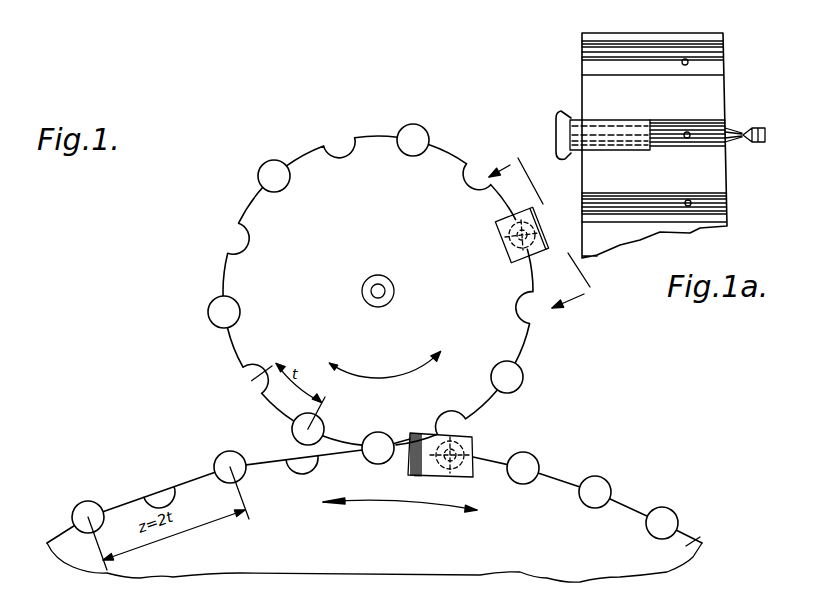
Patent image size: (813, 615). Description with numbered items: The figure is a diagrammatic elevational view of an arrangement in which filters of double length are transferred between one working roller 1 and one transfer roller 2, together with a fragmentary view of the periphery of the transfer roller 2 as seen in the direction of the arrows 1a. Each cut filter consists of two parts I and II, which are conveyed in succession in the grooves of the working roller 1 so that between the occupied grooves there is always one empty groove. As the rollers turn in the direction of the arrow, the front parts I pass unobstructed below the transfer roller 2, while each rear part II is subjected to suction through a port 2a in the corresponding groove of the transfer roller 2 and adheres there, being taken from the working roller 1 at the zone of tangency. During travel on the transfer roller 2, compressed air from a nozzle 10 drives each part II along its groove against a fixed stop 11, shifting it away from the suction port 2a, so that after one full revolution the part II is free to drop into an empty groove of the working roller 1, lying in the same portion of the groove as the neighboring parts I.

In FIG. 1, the working roller 1 is at (693, 545).
In FIG. 1, the transfer roller 2 is at (523, 277).
In FIG. 1A, the transfer roller 2 is at (712, 82).
In FIG. 1A, the suction port 2a is at (689, 200).
In FIG. 1, the nozzle 10 is at (512, 232).
In FIG. 1A, the nozzle 10 is at (757, 127).
In FIG. 1, the fixed stop 11 is at (513, 260).
In FIG. 1A, the fixed stop 11 is at (561, 113).
In FIG. 1, the section arrows 1a— 1a is at (549, 227).
In FIG. 1, the front filter part I is at (531, 461).
In FIG. 1, the rear filter part II is at (612, 473).
In FIG. 1A, the rear filter part II is at (612, 150).